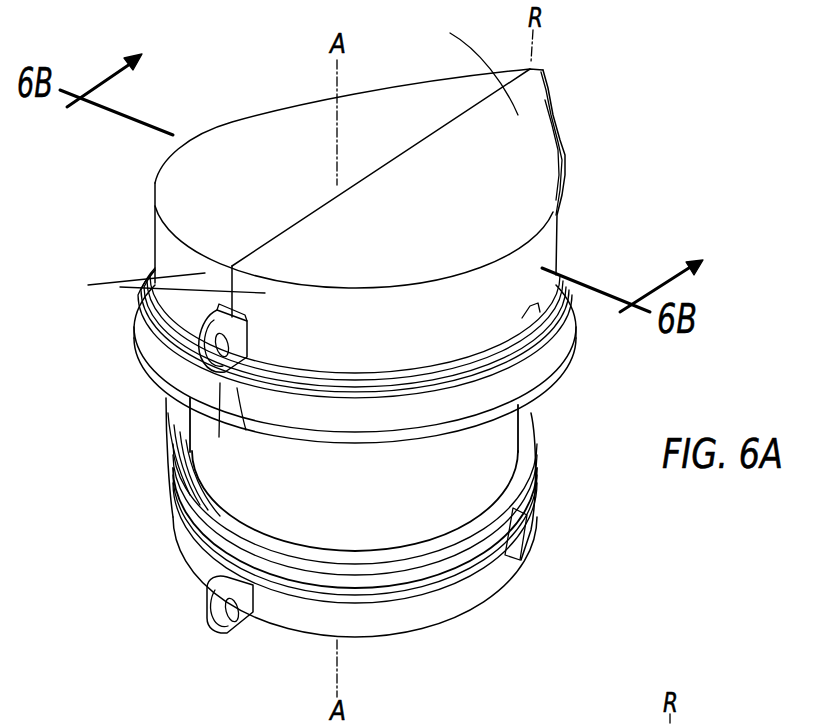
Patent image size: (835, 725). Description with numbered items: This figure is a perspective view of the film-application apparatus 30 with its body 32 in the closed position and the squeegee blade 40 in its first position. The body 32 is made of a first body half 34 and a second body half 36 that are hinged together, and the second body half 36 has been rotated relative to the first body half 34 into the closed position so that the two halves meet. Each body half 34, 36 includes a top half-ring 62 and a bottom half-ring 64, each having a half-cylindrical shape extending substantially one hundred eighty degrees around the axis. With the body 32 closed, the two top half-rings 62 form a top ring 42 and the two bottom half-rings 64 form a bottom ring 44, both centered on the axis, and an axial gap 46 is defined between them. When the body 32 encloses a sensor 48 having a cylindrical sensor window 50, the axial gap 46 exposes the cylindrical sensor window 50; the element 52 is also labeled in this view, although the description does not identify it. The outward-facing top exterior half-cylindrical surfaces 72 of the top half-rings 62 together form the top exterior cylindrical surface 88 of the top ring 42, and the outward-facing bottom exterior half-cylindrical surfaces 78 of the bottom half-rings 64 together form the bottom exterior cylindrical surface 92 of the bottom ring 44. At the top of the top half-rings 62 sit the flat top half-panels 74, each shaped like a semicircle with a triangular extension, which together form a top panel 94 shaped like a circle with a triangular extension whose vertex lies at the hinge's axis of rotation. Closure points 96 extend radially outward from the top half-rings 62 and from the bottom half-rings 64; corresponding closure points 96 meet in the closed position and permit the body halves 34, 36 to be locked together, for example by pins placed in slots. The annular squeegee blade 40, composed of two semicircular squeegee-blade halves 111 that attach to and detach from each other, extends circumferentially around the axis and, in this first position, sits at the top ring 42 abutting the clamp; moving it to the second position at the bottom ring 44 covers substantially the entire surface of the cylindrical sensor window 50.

The film-application apparatus 30 is at (212, 65).
The body 32 is at (308, 100).
The first body half 34 is at (213, 128).
The second body half 36 is at (482, 600).
The squeegee blade 40 is at (570, 382).
The top ring 42 is at (557, 250).
The bottom ring 44 is at (520, 563).
The axial gap 46 is at (167, 413).
The sensor 48 is at (203, 450).
The cylindrical sensor window 50 is at (208, 463).
The fourth ring 52 is at (220, 478).
The top half-ring 62 is at (164, 285).
The bottom half-ring 64 is at (197, 585).
The top exterior half-cylindrical surface 72 is at (165, 242).
The top half-panel 74 is at (467, 88).
The bottom exterior half-cylindrical surface 78 is at (192, 560).
The top exterior cylindrical surface 88 is at (430, 307).
The bottom exterior cylindrical surface 92 is at (437, 607).
The top panel 94 is at (532, 168).
The closure points 96 is at (210, 365).
The squeegee-blade halves 111 is at (212, 420).